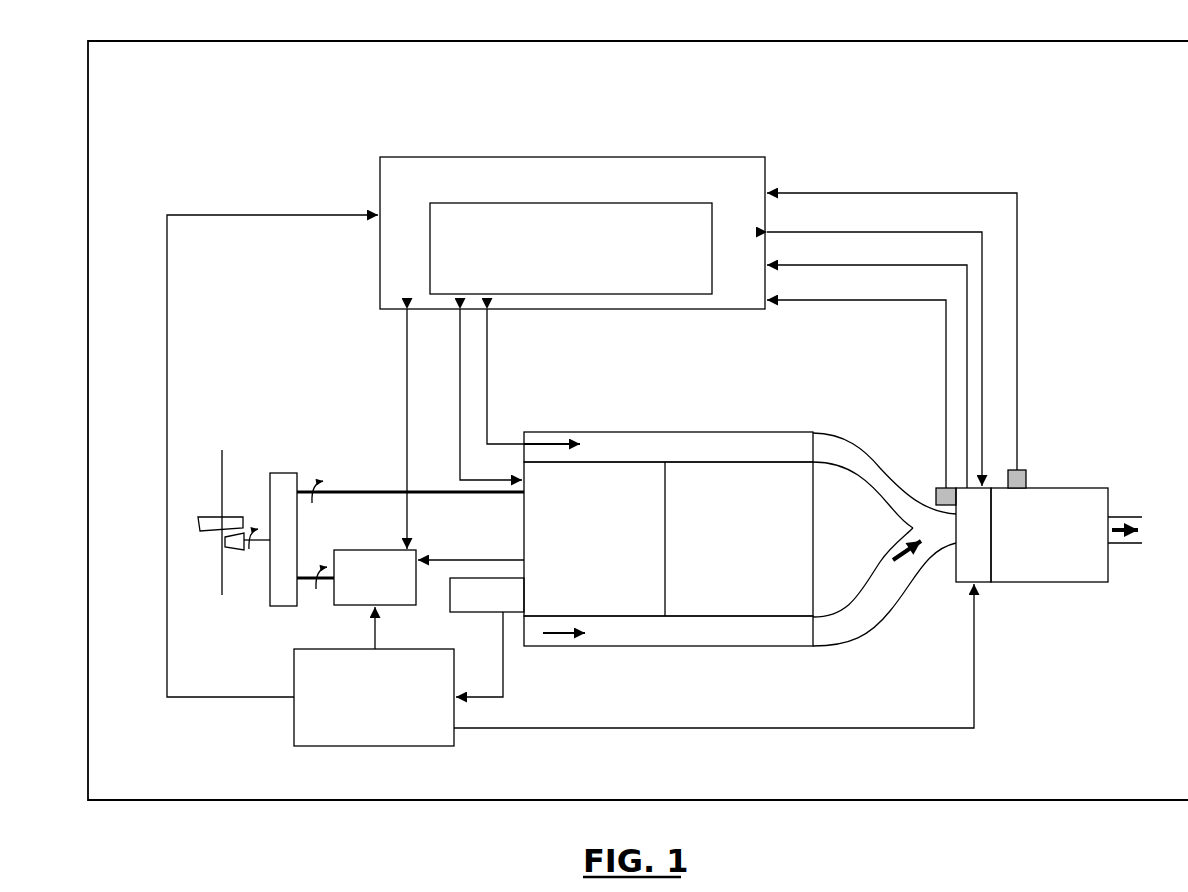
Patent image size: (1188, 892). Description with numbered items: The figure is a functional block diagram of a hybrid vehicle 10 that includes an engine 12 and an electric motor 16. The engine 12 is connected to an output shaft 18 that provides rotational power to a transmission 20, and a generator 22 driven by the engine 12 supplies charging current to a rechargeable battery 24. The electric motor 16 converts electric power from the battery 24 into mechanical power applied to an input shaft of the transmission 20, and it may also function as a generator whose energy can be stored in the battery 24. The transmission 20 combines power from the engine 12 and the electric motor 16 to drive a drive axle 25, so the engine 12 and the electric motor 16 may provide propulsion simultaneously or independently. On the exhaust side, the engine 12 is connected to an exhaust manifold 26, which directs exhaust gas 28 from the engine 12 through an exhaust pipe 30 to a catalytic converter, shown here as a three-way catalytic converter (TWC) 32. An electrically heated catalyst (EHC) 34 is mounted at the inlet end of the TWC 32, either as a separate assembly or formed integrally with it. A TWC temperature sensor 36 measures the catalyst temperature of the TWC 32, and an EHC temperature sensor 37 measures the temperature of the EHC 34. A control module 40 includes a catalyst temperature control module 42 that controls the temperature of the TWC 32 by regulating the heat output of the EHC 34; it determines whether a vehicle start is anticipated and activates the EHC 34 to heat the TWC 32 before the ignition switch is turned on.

The hybrid vehicle 10 is at (653, 41).
The engine 12 is at (666, 576).
The electric motor 16 is at (337, 550).
The output shaft 18 is at (352, 492).
The transmission 20 is at (283, 473).
The generator 22 is at (485, 612).
The rechargeable battery 24 is at (371, 746).
The drive axle 25 is at (206, 517).
The exhaust manifold 26 is at (662, 432).
The exhaust gas 28 is at (548, 444).
The exhaust pipe 30 is at (888, 604).
The three-way catalytic converter (TWC) 32 is at (1048, 488).
The electrically heated catalyst (EHC) 34 is at (984, 582).
The TWC temperature sensor 36 is at (1020, 470).
The EHC temperature sensor 37 is at (937, 488).
The control module 40 is at (569, 157).
The catalyst temperature control module 42 is at (677, 203).